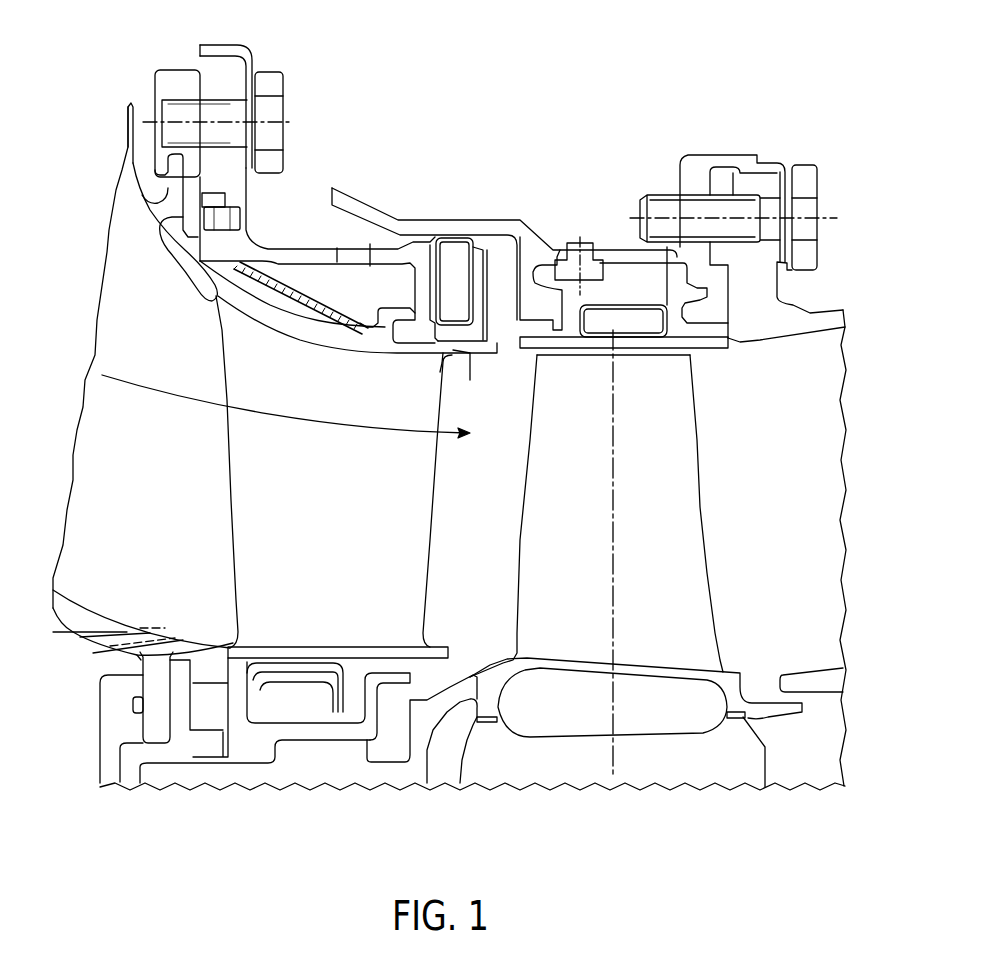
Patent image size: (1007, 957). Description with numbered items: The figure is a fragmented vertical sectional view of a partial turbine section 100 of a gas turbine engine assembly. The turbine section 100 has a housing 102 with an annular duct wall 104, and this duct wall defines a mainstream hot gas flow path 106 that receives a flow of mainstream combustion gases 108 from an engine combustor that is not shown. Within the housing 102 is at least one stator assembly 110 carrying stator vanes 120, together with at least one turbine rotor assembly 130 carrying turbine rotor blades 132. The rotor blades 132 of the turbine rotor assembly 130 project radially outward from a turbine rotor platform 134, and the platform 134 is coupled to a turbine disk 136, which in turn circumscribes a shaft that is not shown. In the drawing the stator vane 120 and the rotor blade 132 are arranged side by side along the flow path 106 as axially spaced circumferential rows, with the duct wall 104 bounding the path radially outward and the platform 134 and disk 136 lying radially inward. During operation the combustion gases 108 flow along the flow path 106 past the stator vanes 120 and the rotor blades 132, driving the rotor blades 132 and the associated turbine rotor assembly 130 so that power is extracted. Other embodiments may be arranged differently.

The turbine section 100 is at (795, 93).
The housing 102 is at (142, 262).
The annular duct wall 104 is at (460, 358).
The mainstream hot gas flow path 106 is at (98, 478).
The mainstream combustion gases 108 is at (307, 424).
The stator assembly 110 is at (223, 576).
The stator vanes 120 is at (418, 591).
The turbine rotor assembly 130 is at (722, 496).
The turbine rotor blades 132 is at (697, 416).
The turbine rotor platform 134 is at (727, 670).
The turbine disk 136 is at (523, 773).